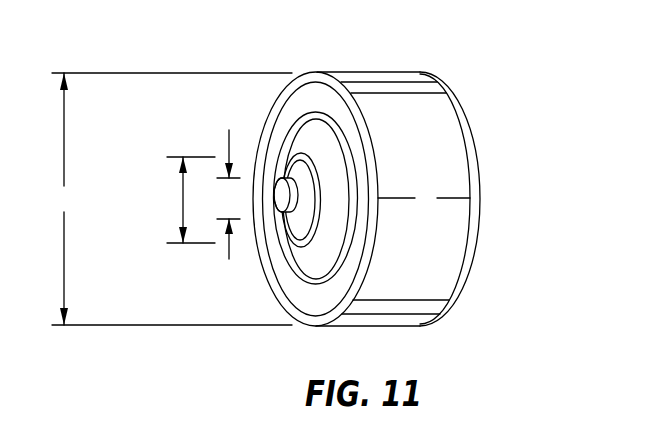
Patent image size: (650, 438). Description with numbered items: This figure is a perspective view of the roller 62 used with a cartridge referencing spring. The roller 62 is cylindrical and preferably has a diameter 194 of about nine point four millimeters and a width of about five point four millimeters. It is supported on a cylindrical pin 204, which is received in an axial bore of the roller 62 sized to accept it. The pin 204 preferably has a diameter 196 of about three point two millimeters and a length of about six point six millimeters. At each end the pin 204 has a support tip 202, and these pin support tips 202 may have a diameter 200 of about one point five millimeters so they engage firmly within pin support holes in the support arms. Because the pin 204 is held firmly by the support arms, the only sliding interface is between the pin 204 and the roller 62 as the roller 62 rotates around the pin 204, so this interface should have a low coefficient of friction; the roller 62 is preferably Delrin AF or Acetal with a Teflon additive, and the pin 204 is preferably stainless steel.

The roller 62 is at (391, 46).
The diameter 194 is at (169, 199).
The diameter 196 is at (182, 199).
The diameter 200 is at (229, 259).
The support tip 202 is at (299, 191).
The cylindrical pin 204 is at (299, 225).